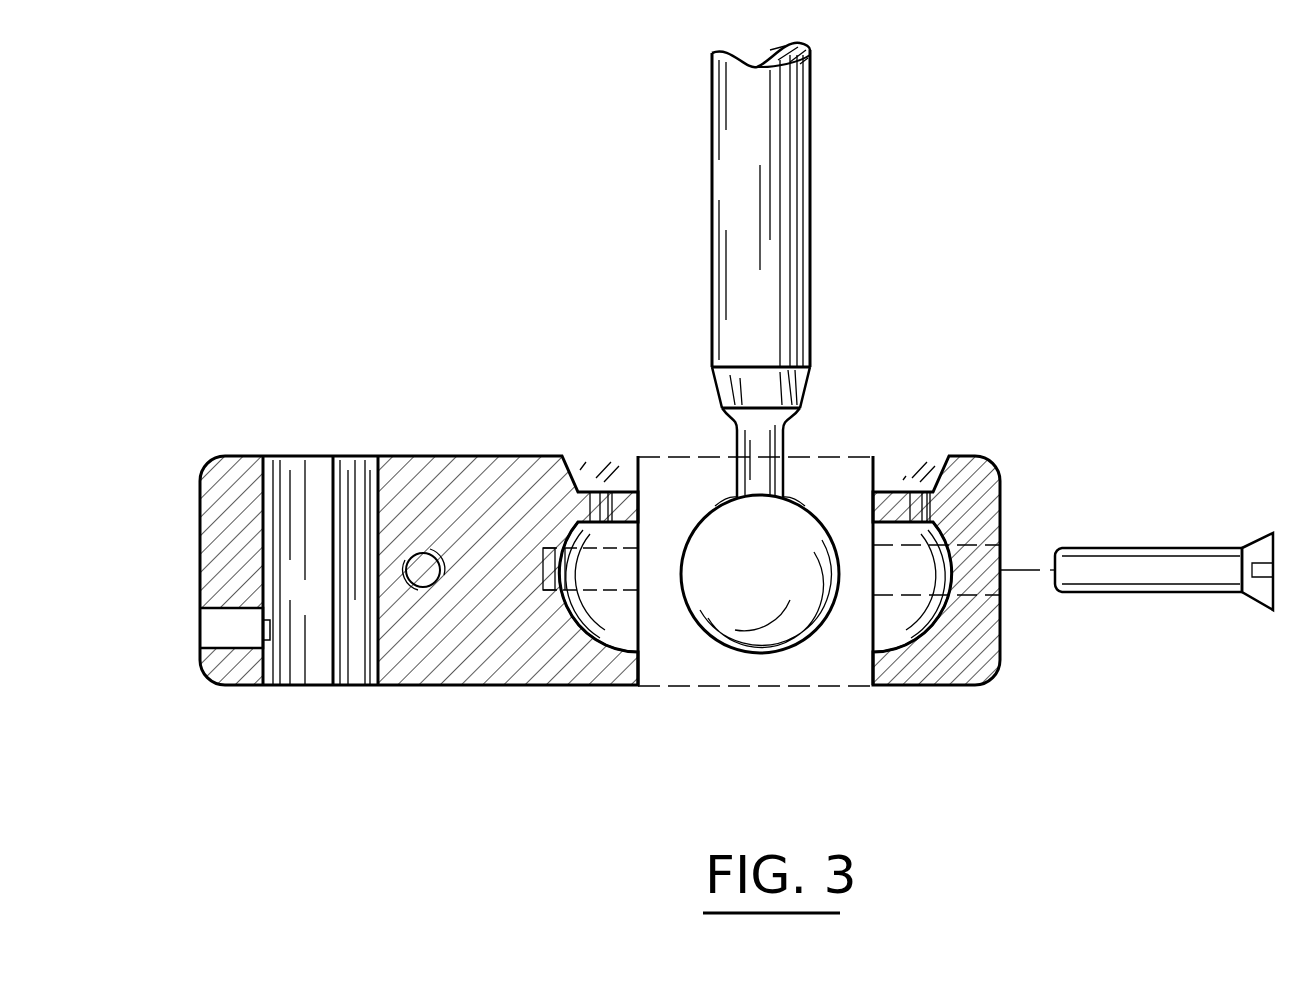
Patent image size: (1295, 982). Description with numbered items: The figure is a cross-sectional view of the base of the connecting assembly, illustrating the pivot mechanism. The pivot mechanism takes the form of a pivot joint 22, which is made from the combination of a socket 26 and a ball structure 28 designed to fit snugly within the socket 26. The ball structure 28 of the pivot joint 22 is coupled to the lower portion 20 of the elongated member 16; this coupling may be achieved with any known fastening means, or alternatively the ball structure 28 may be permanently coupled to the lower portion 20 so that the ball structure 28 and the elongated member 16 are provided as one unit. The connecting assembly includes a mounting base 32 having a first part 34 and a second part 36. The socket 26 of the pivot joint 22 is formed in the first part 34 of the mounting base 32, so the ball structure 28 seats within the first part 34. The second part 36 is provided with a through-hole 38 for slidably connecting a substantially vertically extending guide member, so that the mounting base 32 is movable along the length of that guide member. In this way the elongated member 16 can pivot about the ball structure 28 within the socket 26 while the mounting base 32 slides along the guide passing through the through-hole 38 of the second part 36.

The elongated member 16 is at (812, 150).
The lower portion 20 is at (640, 268).
The pivot joint 22 is at (876, 343).
The socket 26 is at (886, 576).
The ball structure 28 is at (818, 522).
The mounting base 32 is at (1030, 123).
The first part 34 is at (963, 421).
The second part 36 is at (209, 441).
The through-hole 38 is at (315, 450).